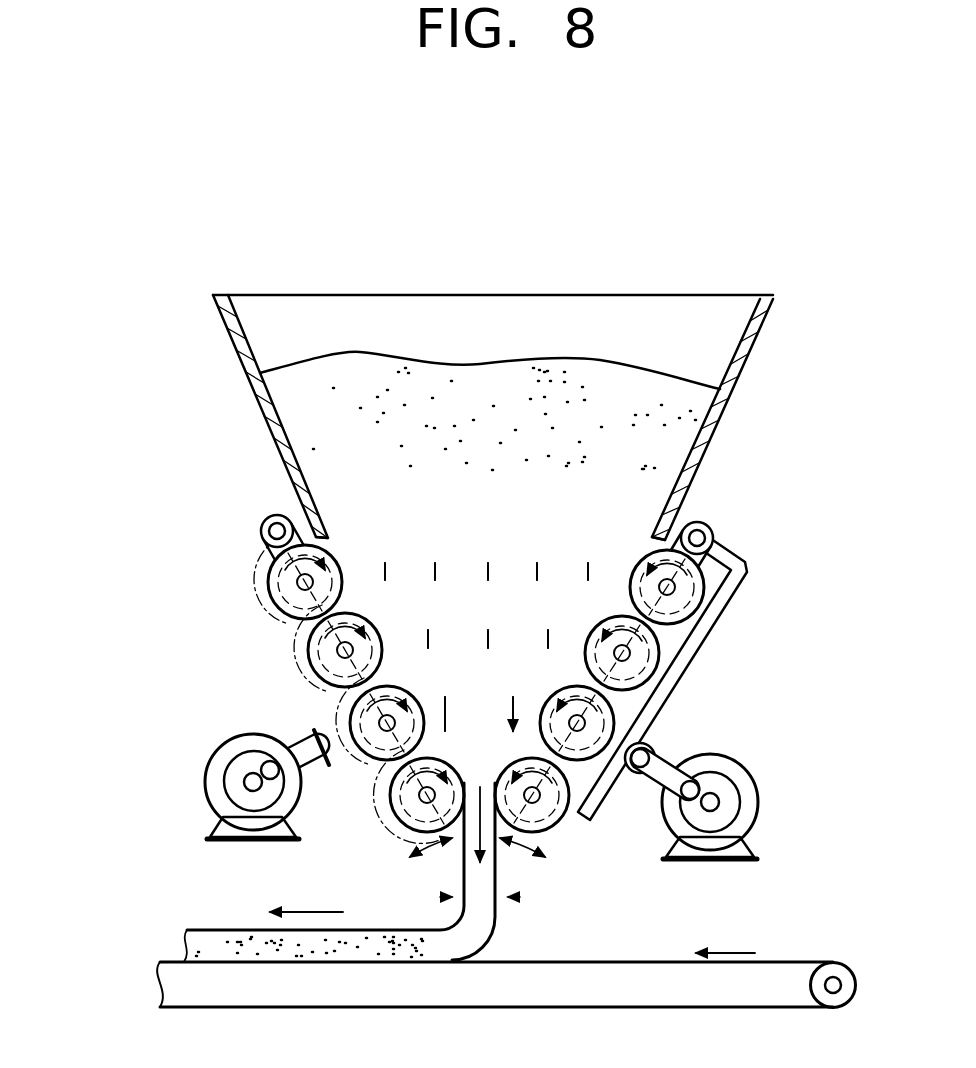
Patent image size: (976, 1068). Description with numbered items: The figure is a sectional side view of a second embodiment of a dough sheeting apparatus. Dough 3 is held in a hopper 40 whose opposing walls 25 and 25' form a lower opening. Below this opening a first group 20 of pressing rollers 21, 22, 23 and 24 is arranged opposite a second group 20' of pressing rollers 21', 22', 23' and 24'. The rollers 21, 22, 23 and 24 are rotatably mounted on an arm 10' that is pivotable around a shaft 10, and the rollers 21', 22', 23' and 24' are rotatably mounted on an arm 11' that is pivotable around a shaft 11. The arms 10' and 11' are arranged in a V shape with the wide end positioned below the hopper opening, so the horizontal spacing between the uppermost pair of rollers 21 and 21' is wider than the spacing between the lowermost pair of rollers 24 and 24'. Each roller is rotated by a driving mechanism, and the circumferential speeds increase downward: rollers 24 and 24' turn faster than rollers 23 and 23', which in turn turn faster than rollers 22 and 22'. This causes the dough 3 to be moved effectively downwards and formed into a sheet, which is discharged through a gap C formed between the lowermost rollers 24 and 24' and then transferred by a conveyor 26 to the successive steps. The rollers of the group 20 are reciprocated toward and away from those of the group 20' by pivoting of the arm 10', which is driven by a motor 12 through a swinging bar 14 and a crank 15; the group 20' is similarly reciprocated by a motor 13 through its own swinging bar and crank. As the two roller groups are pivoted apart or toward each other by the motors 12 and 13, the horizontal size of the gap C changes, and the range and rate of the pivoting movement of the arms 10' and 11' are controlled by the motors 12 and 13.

The dough 3 is at (480, 363).
The hopper 40 is at (763, 331).
The wall of hopper 25 is at (606, 497).
The wall of hopper 25' is at (333, 498).
The shaft 10 is at (735, 492).
The arm 10' is at (738, 533).
The shaft 11 is at (216, 497).
The arm 11' is at (209, 536).
The swinging bar 14 is at (738, 595).
The group of pressing rollers 20 is at (690, 678).
The group of pressing rollers 20' is at (247, 668).
The pressing roller 21 is at (715, 579).
The pressing roller 22 is at (681, 653).
The pressing roller 23 is at (649, 723).
The pressing roller 24 is at (555, 838).
The pressing roller 21' is at (224, 582).
The pressing roller 22' is at (253, 650).
The pressing roller 23' is at (282, 718).
The pressing roller 24' is at (359, 819).
The motor 12 is at (758, 808).
The motor 13 is at (212, 790).
The crank 15 is at (655, 750).
The conveyor 26 is at (772, 962).
The gap C is at (493, 899).